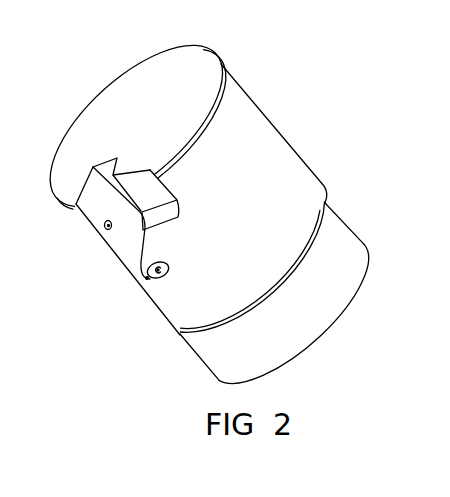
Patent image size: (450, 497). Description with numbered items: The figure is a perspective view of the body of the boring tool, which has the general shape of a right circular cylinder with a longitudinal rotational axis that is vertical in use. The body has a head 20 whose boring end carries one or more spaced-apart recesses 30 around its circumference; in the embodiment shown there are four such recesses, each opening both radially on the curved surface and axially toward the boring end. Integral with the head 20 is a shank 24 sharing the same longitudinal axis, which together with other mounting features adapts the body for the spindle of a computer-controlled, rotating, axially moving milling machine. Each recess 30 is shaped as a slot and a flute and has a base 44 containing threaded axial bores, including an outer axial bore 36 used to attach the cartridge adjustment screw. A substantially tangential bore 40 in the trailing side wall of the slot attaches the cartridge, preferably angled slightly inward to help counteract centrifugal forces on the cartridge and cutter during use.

The head 20 is at (242, 130).
The shank 24 is at (337, 252).
The recess 30 is at (127, 230).
The outer axial bore 36 is at (158, 272).
The tangential bore 40 is at (105, 229).
The base 44 is at (147, 279).